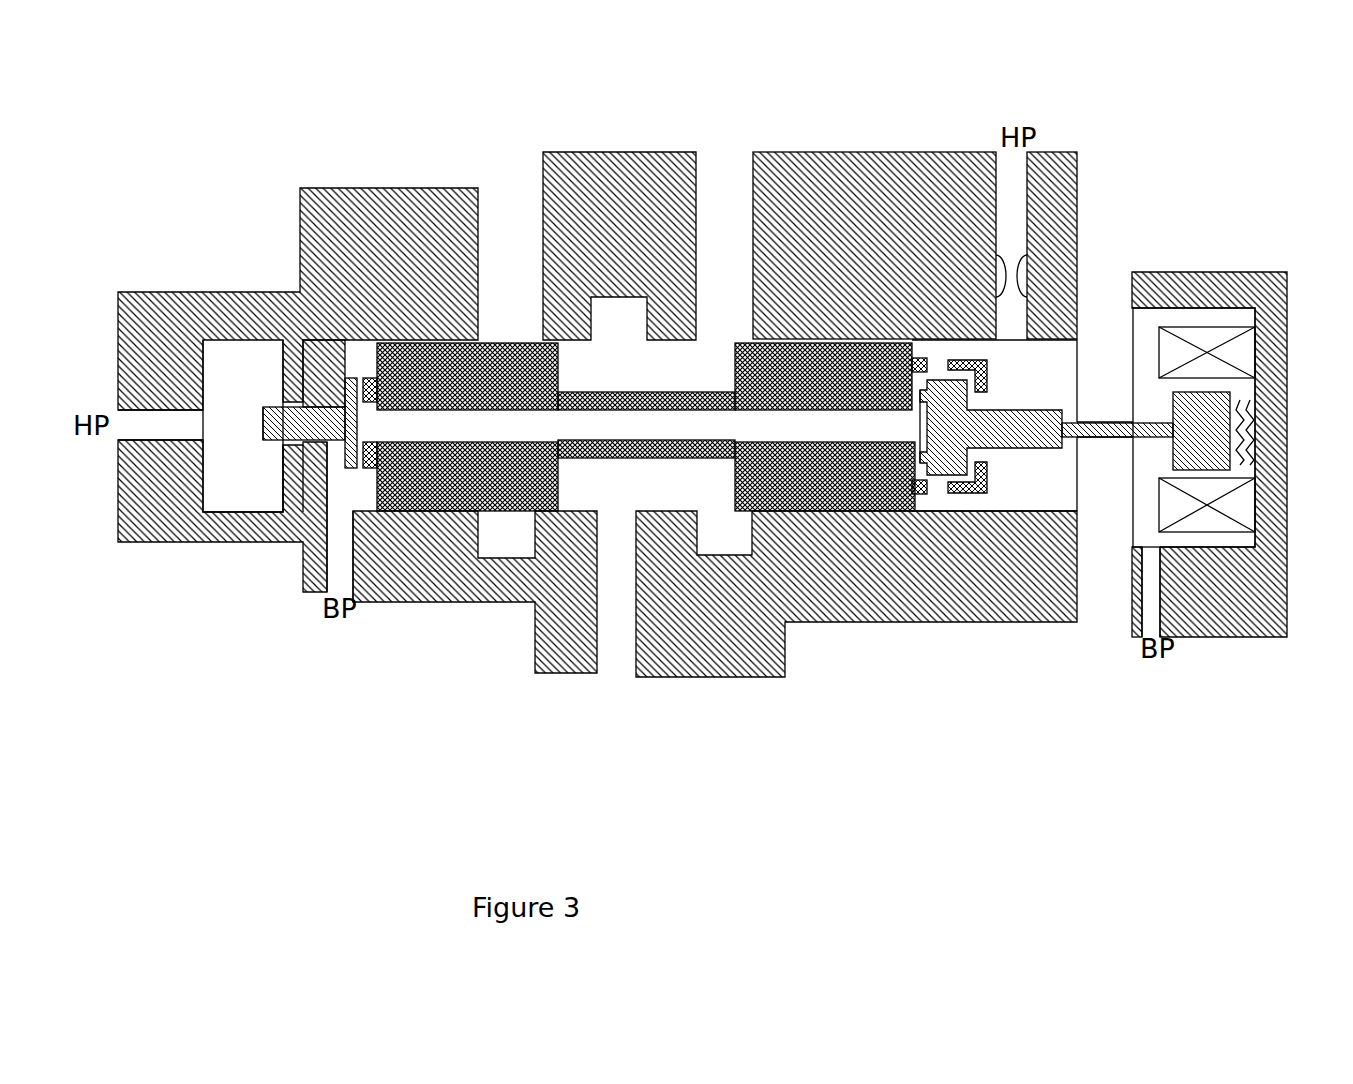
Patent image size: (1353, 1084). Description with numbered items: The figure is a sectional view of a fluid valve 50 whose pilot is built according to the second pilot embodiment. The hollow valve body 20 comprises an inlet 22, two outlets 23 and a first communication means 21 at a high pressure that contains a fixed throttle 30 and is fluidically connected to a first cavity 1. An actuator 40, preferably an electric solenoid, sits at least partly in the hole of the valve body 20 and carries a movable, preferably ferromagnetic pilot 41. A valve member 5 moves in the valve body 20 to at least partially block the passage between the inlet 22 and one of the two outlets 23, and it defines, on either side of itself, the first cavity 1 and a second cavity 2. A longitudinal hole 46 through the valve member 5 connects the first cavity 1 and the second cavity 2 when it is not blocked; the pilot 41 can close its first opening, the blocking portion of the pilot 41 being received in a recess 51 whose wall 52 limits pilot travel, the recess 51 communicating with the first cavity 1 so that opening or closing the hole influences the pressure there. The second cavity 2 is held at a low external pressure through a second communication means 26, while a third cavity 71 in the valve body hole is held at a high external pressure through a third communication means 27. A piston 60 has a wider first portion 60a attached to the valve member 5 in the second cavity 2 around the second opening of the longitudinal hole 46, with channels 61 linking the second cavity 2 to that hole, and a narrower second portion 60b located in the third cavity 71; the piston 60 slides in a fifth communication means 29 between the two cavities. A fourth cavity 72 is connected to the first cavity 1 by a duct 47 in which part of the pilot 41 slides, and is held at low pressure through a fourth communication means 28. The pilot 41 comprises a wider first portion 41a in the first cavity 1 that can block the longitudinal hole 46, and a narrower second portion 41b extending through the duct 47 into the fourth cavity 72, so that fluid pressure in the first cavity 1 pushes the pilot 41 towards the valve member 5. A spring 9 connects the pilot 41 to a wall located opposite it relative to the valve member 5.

The first cavity 1 is at (1035, 375).
The second cavity 2 is at (352, 487).
The valve member 5 is at (783, 478).
The spring 9 is at (1253, 420).
The hollow valve body 20 is at (382, 240).
The first communication means 21 is at (1010, 198).
The inlet 22 is at (607, 617).
The outlets 23 is at (725, 223).
The second communication means 26 is at (337, 553).
The third communication means 27 is at (158, 425).
The fourth communication means 28 is at (1152, 608).
The fifth communication means 29 is at (292, 445).
The fixed throttle 30 is at (1012, 277).
The actuator 40 is at (1215, 340).
The pilot 41 is at (1053, 450).
The first portion of the pilot 41a is at (1018, 437).
The second portion of the pilot 41b is at (1104, 440).
The longitudinal hole 46 is at (817, 425).
The duct 47 is at (1105, 440).
The fluid valve 50 is at (370, 688).
The recess 51 is at (923, 470).
The wall of the recess 52 is at (972, 493).
The piston 60 is at (327, 407).
The first portion of the piston 60a is at (367, 378).
The second portion of the piston 60b is at (277, 420).
The channels 61 is at (365, 460).
The third cavity 71 is at (245, 357).
The fourth cavity 72 is at (1172, 322).